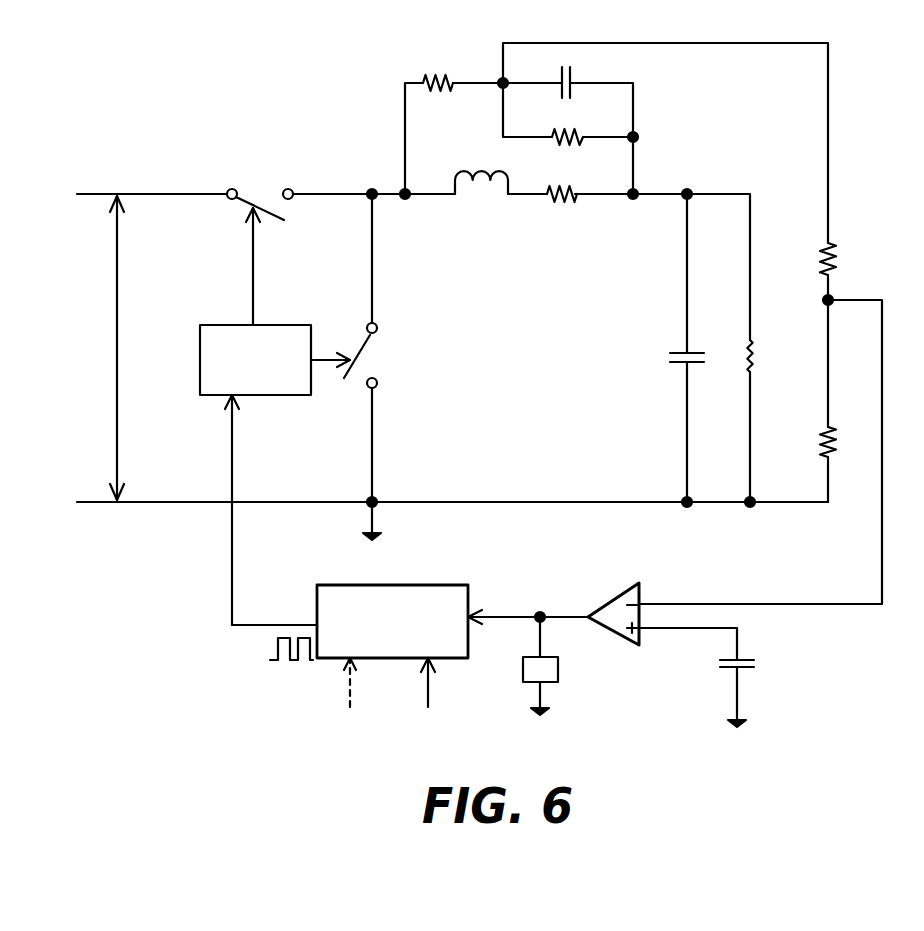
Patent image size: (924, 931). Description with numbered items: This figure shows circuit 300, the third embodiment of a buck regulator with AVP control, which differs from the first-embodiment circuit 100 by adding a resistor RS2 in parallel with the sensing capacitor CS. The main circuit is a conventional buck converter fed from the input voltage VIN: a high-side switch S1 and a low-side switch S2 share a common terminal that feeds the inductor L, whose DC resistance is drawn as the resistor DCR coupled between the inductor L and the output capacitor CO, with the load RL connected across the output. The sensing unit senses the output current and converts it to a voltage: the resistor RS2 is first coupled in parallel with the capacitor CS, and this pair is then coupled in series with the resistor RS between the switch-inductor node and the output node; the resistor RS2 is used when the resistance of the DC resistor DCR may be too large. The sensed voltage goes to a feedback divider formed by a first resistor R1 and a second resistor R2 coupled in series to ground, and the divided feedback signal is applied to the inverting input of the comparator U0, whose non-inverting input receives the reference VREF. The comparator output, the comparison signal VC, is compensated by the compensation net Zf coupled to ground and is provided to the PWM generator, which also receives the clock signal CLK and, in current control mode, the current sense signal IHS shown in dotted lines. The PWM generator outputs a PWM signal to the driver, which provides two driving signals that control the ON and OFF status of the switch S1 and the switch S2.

The circuit with AVP control 300 is at (121, 124).
The circuit with AVP control 100 is at (502, 154).
The switch S1 is at (260, 190).
The switch S2 is at (377, 355).
The input voltage VIN is at (115, 348).
The inductor L is at (481, 202).
The DC resistor of the inductor DCR is at (574, 212).
The resistor RS is at (433, 68).
The capacitor CS is at (581, 75).
The resistor RS2 is at (577, 153).
The output capacitor CO is at (667, 362).
The load RL is at (770, 364).
The first resistor R1 is at (848, 260).
The second resistor R2 is at (848, 444).
The comparator U0 is at (611, 608).
The comparison signal VC is at (554, 604).
The compensation net Zf is at (569, 667).
The reference VREF is at (763, 670).
The CLK signal CLK is at (425, 698).
The current sense signal IHS is at (353, 697).